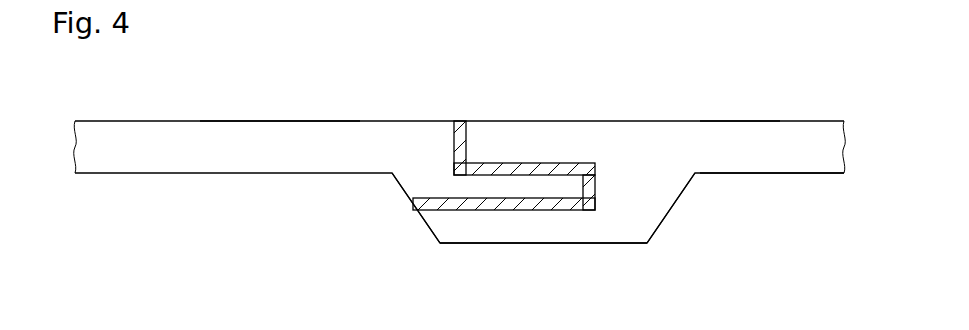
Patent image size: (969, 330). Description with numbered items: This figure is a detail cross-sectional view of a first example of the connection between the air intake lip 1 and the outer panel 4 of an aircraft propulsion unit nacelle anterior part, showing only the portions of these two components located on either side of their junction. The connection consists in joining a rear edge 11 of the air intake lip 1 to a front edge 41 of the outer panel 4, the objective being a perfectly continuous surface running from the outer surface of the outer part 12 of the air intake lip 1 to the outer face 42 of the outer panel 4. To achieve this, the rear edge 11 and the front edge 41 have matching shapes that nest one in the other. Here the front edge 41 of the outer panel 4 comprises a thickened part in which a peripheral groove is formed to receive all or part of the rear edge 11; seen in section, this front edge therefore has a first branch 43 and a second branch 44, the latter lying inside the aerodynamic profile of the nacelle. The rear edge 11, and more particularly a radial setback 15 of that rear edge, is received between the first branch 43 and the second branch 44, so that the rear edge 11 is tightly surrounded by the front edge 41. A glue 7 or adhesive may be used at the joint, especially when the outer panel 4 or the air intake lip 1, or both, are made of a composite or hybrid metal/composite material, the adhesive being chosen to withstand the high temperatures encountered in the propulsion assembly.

The air intake lip 1 is at (167, 133).
The outer part of the air intake lip 12 is at (270, 121).
The outer panel 4 is at (792, 137).
The front edge of the outer panel 41 is at (563, 145).
The outer face of the outer panel 42 is at (732, 121).
The first branch 43 is at (487, 140).
The second branch 44 is at (513, 223).
The glue 7 is at (460, 152).
The rear edge of the air intake lip 11 is at (527, 188).
The radial setback 15 is at (572, 187).